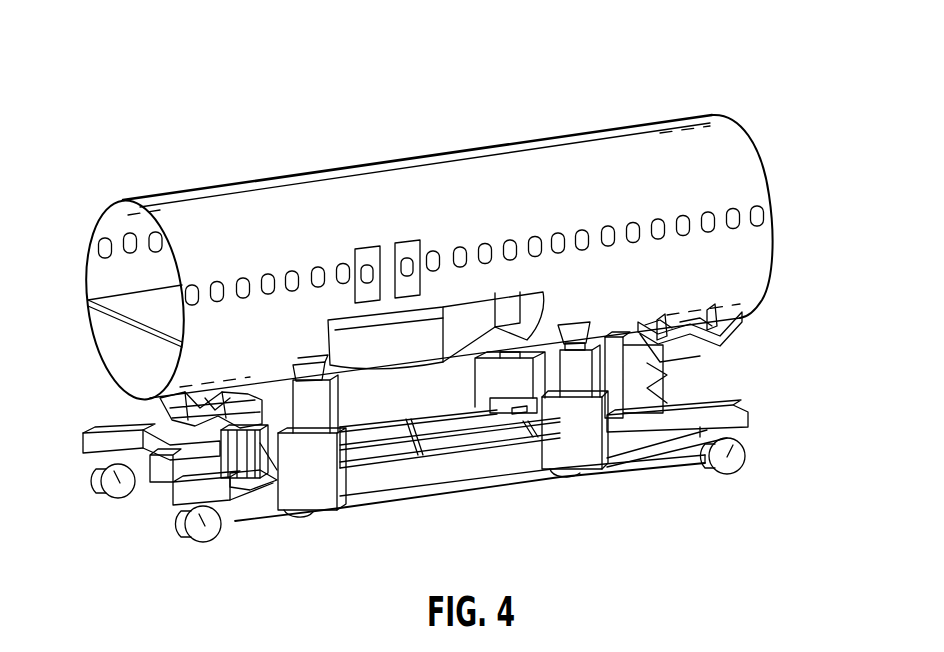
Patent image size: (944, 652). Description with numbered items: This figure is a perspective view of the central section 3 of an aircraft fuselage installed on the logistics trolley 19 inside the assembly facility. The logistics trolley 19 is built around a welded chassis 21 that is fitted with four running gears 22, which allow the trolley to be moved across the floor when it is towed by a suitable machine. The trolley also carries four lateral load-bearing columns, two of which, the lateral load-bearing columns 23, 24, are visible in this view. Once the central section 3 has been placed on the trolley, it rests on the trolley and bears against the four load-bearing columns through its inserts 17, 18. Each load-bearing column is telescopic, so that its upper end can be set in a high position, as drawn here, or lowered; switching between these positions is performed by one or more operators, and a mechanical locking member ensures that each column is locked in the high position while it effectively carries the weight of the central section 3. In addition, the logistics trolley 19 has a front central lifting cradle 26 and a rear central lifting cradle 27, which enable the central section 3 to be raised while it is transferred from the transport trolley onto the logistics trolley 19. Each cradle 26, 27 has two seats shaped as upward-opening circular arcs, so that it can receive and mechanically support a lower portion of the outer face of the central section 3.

The central section 3 is at (450, 118).
The insert 17 is at (320, 362).
The insert 18 is at (575, 320).
The logistics trolley 19 is at (545, 523).
The welded chassis 21 is at (440, 483).
The running gears 22 is at (93, 473).
The lateral load-bearing column 23 is at (312, 490).
The lateral load-bearing column 24 is at (582, 458).
The front central lifting cradle 26 is at (150, 407).
The rear central lifting cradle 27 is at (707, 349).